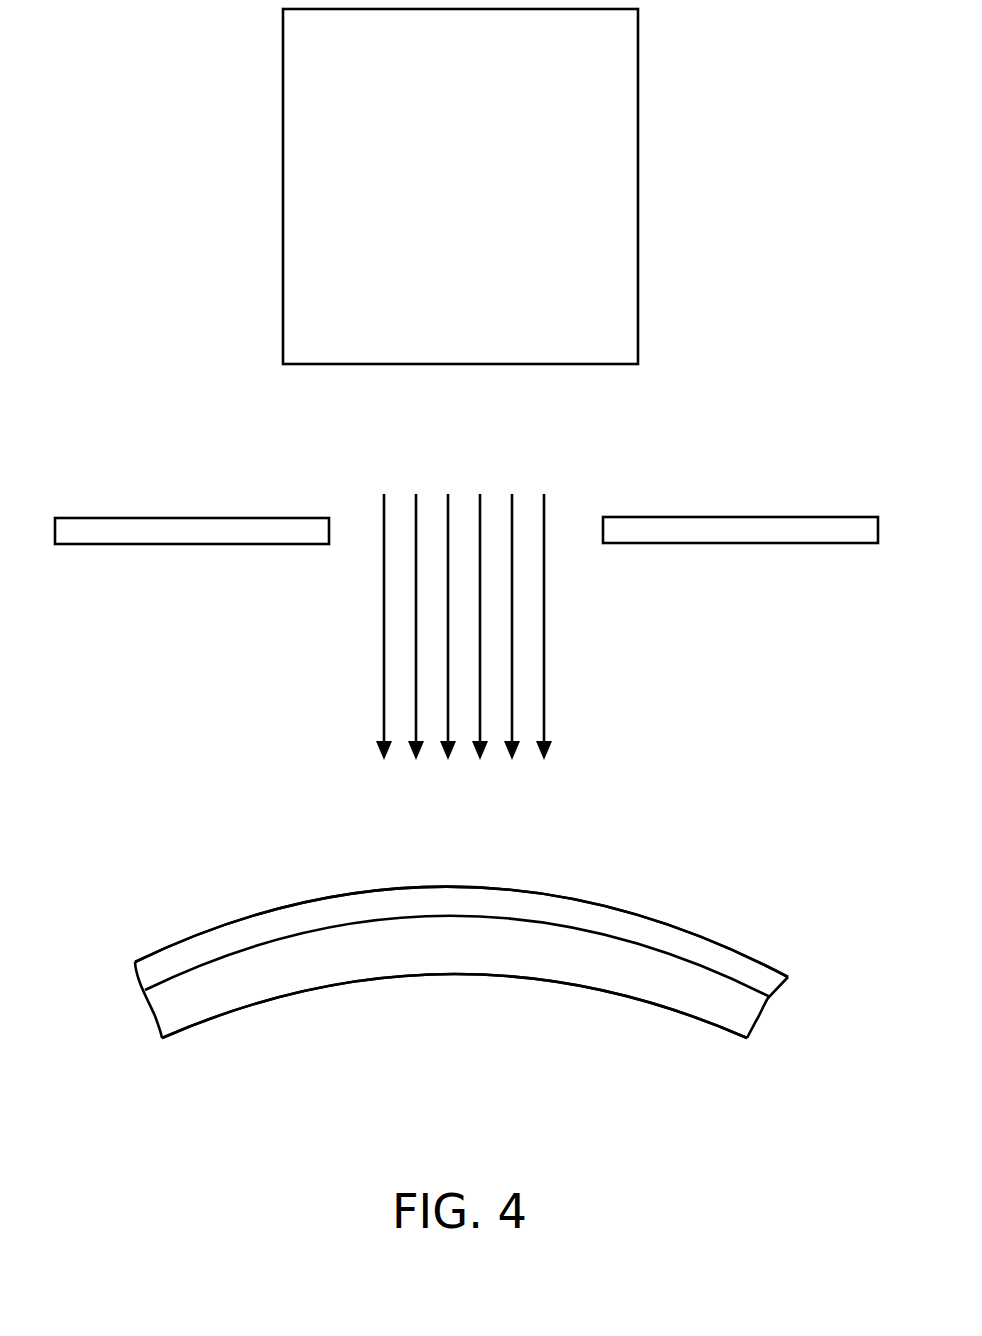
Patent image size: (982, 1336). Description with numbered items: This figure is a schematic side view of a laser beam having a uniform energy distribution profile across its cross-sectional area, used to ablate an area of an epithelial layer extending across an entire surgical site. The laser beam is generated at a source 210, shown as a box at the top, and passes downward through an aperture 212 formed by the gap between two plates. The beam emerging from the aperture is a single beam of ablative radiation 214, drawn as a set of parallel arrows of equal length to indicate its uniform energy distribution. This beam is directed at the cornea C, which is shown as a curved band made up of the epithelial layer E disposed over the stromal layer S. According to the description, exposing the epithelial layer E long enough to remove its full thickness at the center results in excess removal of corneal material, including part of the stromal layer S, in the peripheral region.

The laser beam generator 210 is at (622, 217).
The aperture 212 is at (603, 527).
The single beam of ablative radiation 214 is at (294, 655).
The cornea C is at (176, 874).
The epithelial layer E is at (642, 926).
The stromal layer S is at (352, 963).